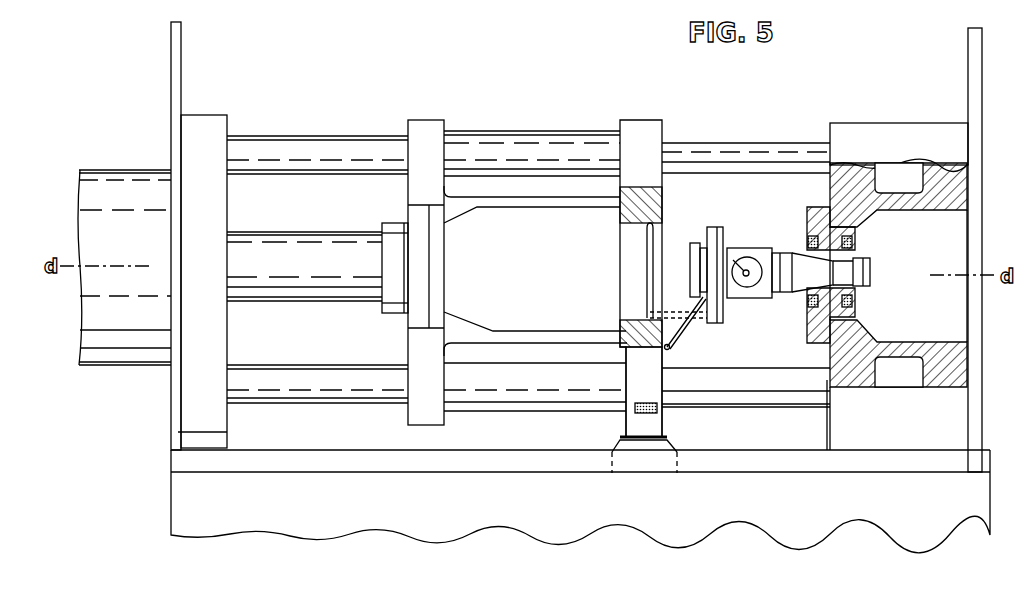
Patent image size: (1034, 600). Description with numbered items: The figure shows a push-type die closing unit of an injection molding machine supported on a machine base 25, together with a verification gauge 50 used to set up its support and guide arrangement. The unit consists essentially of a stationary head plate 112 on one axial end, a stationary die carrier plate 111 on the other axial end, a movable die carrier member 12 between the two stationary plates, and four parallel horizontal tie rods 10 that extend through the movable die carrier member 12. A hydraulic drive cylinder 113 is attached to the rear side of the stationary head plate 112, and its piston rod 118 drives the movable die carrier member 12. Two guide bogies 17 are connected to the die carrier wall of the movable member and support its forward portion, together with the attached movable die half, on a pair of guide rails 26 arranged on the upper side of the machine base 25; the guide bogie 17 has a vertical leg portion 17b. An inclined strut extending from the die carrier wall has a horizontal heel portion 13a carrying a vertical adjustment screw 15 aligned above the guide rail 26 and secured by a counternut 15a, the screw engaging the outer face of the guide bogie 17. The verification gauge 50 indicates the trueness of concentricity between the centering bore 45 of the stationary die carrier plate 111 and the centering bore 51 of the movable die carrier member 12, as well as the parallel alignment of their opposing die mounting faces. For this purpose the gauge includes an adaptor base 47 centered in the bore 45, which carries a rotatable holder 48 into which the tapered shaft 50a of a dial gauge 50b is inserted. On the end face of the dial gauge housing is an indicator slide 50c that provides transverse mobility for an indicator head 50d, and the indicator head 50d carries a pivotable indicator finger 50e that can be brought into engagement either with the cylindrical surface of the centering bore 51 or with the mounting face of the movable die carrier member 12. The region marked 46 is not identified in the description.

The tie rods 10 is at (263, 150).
The piston rod 118 is at (317, 248).
The movable die carrier member 12 is at (630, 170).
The centering bore 51 is at (650, 243).
The indicator head 50d is at (690, 270).
The indicator finger 50e is at (660, 312).
The dial gauge 50b is at (747, 265).
The rotatable holder 48 is at (807, 227).
The stationary die carrier plate 111 is at (893, 140).
The housing upper part 46 is at (940, 238).
The tapered shaft 50a is at (870, 277).
The centering bore 45 is at (833, 337).
The indicator slide 50c is at (706, 300).
The verification gauge 50 is at (752, 306).
The adaptor base 47 is at (815, 340).
The vertical adjustment screw 15 is at (636, 408).
The counternut 15a is at (663, 410).
The horizontal heel portion 13a is at (633, 425).
The guide bogie 17 is at (633, 447).
The vertical leg portion 17b is at (657, 463).
The hydraulic drive cylinder 113 is at (104, 340).
The stationary head plate 112 is at (198, 382).
The machine base 25 is at (234, 506).
The guide rail 26 is at (320, 465).